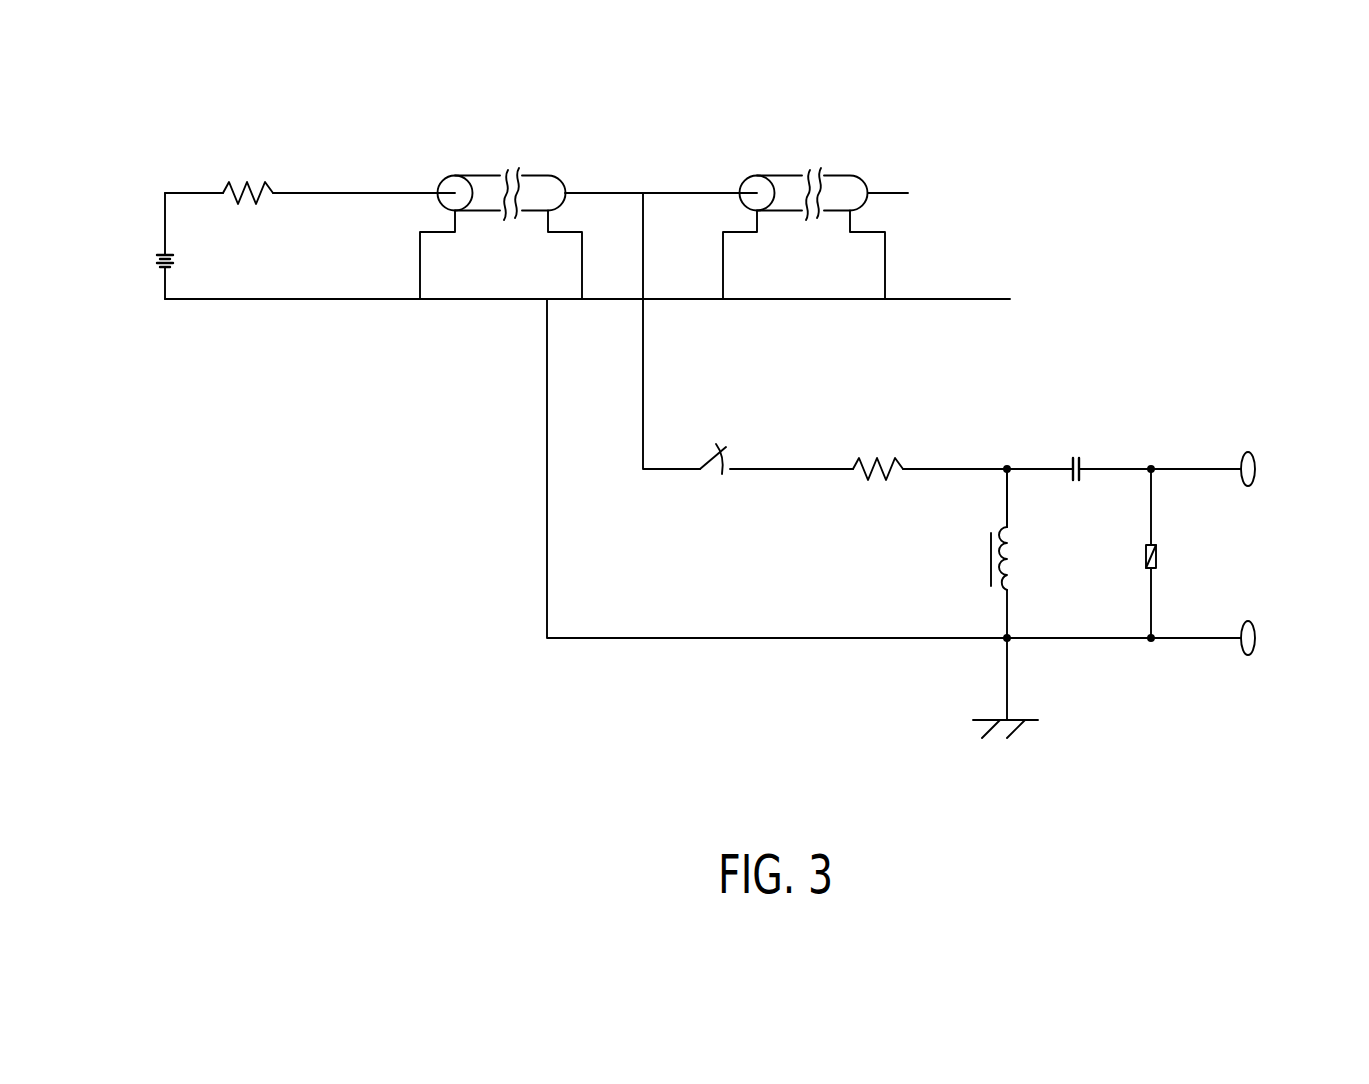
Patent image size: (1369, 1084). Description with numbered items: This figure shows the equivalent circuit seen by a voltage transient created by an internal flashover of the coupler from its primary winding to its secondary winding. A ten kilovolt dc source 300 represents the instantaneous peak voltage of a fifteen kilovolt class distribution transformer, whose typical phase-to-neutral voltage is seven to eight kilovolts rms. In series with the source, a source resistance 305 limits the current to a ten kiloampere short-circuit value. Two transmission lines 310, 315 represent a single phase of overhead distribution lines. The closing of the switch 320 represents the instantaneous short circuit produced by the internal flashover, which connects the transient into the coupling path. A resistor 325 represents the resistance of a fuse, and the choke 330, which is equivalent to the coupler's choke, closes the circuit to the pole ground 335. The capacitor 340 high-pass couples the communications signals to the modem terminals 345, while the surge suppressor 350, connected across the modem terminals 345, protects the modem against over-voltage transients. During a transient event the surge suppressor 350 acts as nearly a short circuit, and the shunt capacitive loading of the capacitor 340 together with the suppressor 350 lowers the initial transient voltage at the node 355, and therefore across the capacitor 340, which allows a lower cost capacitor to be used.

The 10 kV dc source 300 is at (165, 250).
The source resistance 305 is at (253, 186).
The transmission line 310 is at (482, 176).
The transmission line 315 is at (782, 176).
The switch 320 is at (724, 442).
The resistor 325 is at (878, 460).
The choke 330 is at (991, 572).
The pole ground 335 is at (1032, 720).
The capacitor 340 is at (1085, 466).
The modem terminals 345 is at (1255, 469).
The surge suppressor 350 is at (1146, 557).
The node 355 is at (1006, 466).